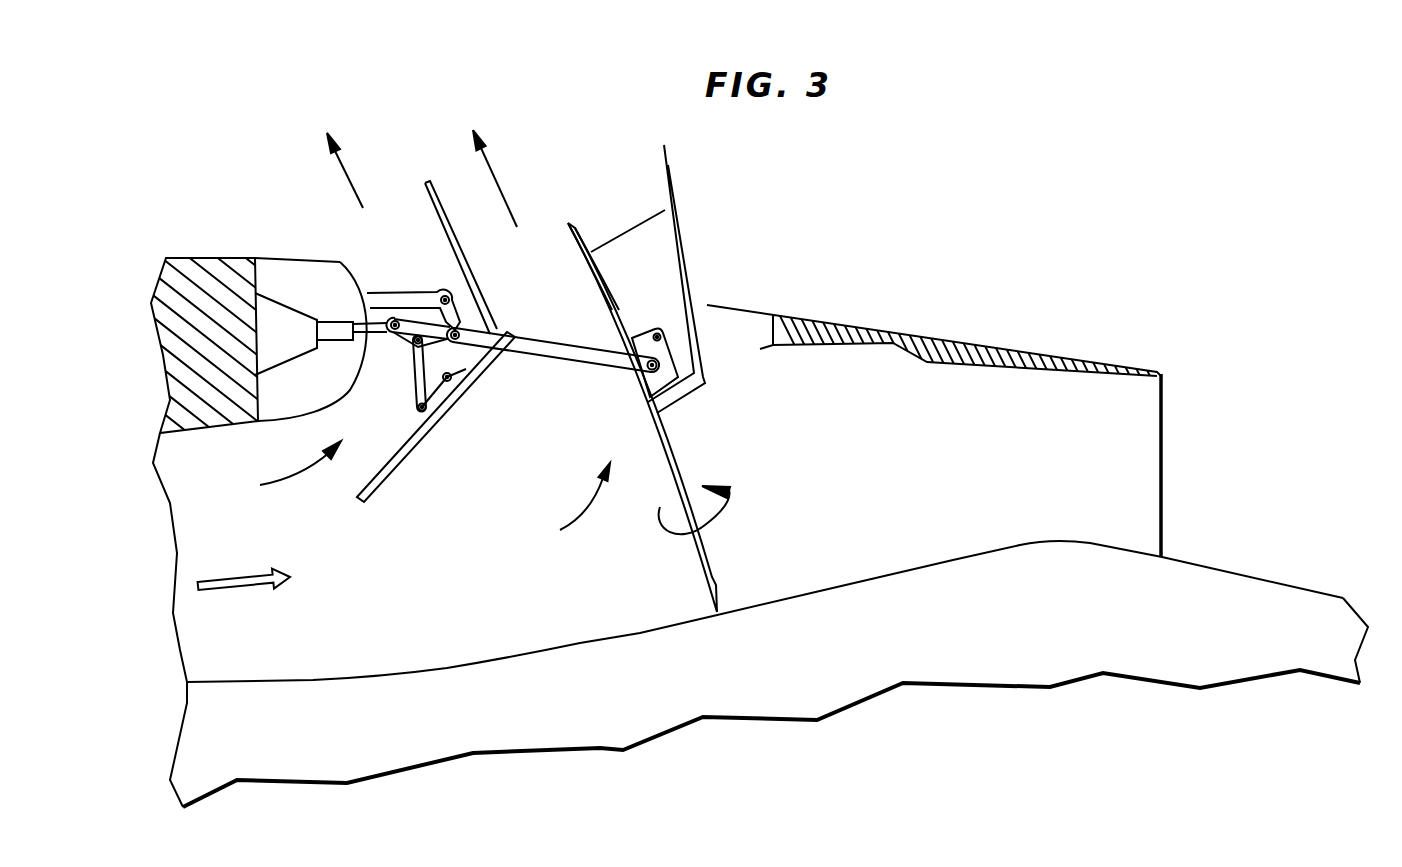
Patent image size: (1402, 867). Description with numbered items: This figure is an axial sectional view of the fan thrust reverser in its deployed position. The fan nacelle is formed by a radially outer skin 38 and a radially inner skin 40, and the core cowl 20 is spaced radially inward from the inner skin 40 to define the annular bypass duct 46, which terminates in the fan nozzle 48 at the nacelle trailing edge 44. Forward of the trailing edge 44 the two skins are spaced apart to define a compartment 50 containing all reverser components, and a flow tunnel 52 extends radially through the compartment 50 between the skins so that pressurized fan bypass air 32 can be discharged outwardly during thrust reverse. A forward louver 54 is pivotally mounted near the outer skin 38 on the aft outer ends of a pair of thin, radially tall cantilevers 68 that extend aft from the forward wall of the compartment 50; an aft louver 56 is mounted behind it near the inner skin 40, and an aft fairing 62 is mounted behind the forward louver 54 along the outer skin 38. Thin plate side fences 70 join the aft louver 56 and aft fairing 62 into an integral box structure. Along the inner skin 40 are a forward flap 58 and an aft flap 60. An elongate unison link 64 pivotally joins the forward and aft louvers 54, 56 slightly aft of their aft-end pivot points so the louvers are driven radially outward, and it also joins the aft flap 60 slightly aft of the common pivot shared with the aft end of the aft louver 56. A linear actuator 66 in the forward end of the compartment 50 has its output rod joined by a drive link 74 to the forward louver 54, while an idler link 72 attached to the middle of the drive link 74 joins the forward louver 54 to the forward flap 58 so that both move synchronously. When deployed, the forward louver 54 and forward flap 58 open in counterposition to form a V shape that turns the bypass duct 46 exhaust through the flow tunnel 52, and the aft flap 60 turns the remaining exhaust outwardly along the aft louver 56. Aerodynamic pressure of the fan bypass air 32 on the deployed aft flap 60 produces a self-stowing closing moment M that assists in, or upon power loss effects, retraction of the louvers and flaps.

The core cowl 20 is at (355, 738).
The fan bypass air 32 is at (507, 190).
The outer skin 38 is at (189, 257).
The inner skin 40 is at (193, 437).
The nacelle trailing edge 44 is at (1163, 478).
The bypass duct 46 is at (295, 652).
The fan nozzle 48 is at (1075, 481).
The compartment 50 is at (268, 268).
The flow tunnel 52 is at (552, 326).
The forward louver 54 is at (433, 237).
The aft louver 56 is at (585, 262).
The forward flap 58 is at (398, 455).
The aft flap 60 is at (677, 452).
The aft fairing 62 is at (687, 238).
The unison link 64 is at (570, 372).
The linear actuator 66 is at (335, 318).
The cantilevers 68 is at (373, 293).
The side fences 70 is at (635, 284).
The idler link 72 is at (414, 378).
The drive link 74 is at (357, 361).
The self-stowing closing moment M is at (720, 510).